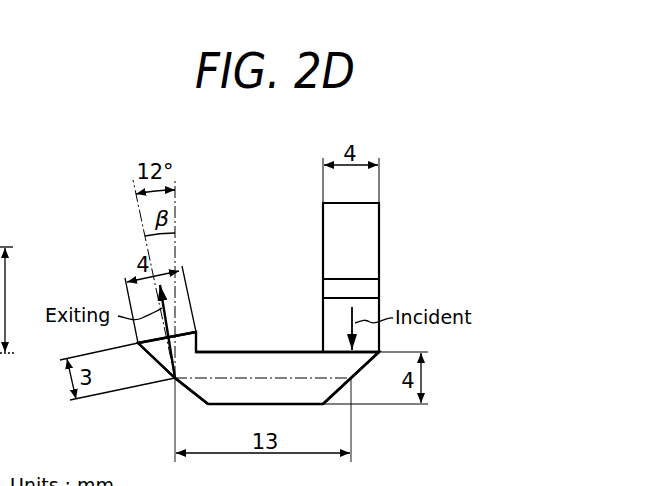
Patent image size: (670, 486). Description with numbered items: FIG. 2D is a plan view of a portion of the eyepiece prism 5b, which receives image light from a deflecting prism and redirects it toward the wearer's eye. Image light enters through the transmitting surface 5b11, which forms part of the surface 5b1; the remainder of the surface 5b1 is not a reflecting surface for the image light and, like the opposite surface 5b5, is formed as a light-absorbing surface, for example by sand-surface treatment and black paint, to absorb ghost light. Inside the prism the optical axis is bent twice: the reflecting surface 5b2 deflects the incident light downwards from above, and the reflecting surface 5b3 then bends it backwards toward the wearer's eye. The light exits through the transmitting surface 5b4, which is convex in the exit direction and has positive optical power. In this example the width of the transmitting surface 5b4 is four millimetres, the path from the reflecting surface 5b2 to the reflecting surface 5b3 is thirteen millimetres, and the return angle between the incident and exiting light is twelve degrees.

The eyepiece prism 5b is at (289, 391).
The surface 5b1 is at (256, 351).
The transmitting surface 5b11 is at (337, 351).
The reflecting surface 5b2 is at (352, 374).
The reflecting surface 5b3 is at (163, 372).
The transmitting surface 5b4 is at (196, 332).
The surface 5b5 is at (243, 404).